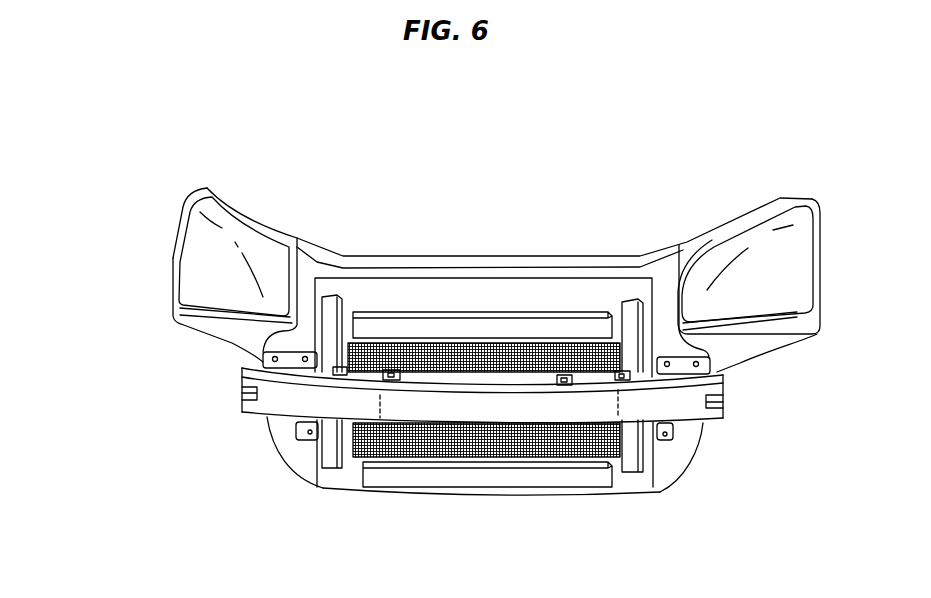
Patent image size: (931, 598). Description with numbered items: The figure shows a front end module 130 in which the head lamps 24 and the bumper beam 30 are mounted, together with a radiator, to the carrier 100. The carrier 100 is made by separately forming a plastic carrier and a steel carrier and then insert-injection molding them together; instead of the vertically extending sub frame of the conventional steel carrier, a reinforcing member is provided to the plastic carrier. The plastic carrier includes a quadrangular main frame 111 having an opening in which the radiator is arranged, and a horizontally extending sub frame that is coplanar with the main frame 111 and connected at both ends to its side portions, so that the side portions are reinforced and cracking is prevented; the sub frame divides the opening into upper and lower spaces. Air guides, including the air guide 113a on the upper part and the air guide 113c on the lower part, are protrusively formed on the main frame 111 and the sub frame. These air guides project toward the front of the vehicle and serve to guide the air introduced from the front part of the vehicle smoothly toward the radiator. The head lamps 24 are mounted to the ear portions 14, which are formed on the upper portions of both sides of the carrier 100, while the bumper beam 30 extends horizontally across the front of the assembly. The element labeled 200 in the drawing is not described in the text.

The ear portion 14 is at (223, 177).
The head lamp 24 is at (198, 265).
The bumper beam 30 is at (668, 405).
The carrier 100 is at (389, 262).
The main frame 111 is at (478, 290).
The air guide 113a is at (570, 325).
The air guide 113c is at (527, 475).
The front end module 130 is at (280, 462).
The cooling module 200 is at (427, 442).